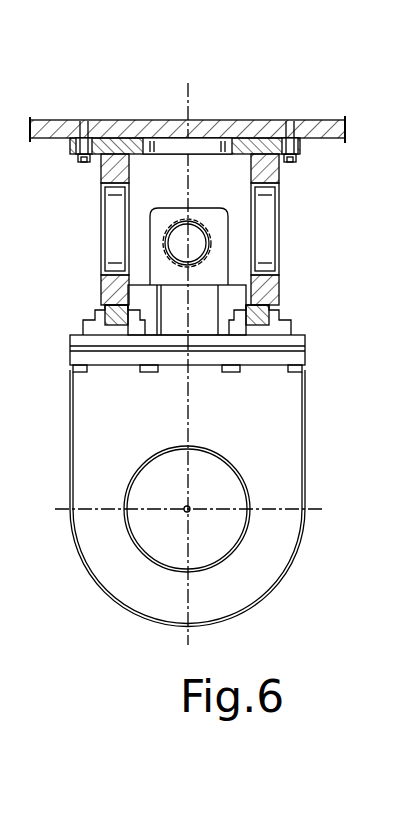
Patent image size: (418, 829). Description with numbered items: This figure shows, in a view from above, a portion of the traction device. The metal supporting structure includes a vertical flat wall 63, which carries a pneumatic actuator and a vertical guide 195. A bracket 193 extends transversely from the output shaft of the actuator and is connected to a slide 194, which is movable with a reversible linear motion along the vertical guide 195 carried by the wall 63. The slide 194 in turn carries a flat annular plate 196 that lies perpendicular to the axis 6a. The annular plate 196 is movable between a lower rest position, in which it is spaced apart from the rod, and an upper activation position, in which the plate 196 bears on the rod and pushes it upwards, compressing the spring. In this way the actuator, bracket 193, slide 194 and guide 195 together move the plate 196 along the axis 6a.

The vertical flat wall 63 is at (230, 138).
The vertical guide 195 is at (286, 270).
The bracket 193 is at (203, 311).
The slide 194 is at (193, 364).
The flat annular plate 196 is at (270, 480).
The axis 6a is at (189, 512).